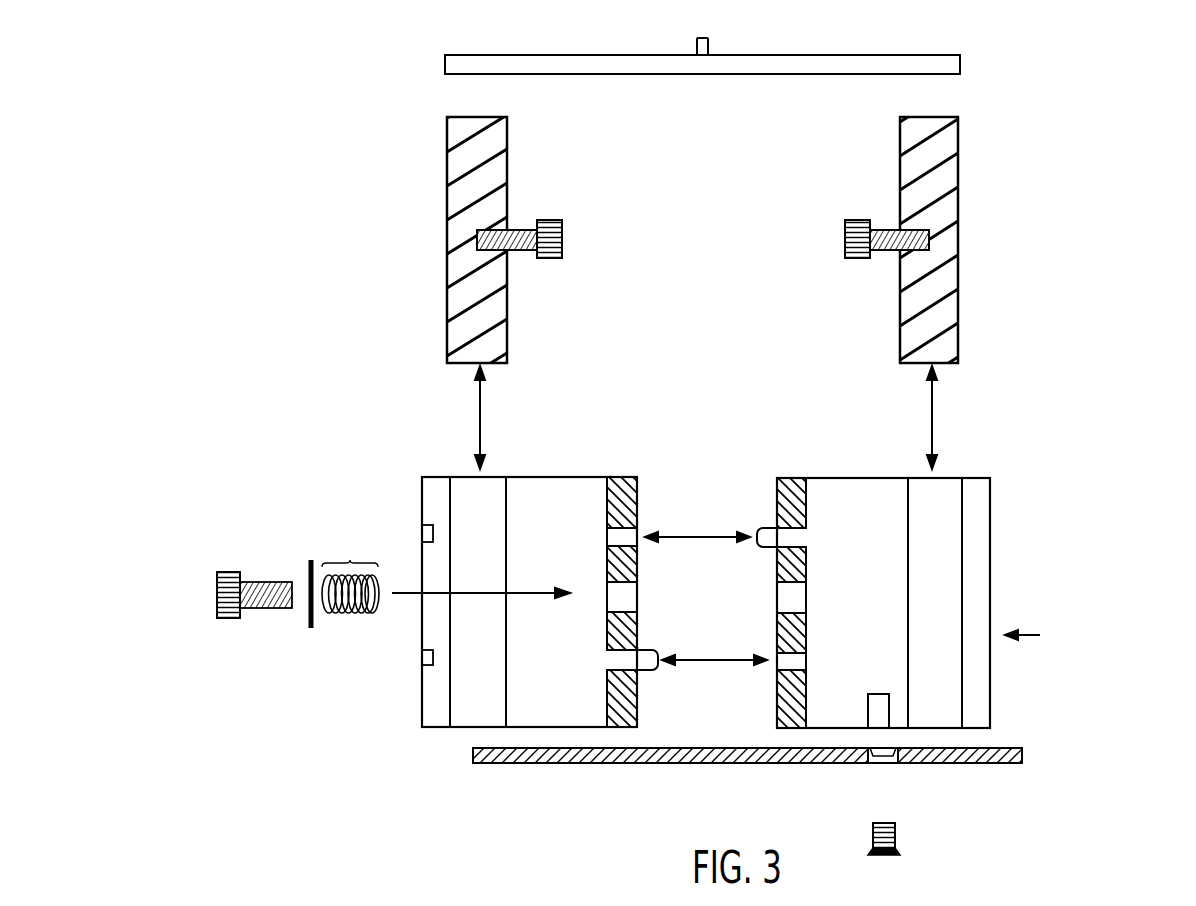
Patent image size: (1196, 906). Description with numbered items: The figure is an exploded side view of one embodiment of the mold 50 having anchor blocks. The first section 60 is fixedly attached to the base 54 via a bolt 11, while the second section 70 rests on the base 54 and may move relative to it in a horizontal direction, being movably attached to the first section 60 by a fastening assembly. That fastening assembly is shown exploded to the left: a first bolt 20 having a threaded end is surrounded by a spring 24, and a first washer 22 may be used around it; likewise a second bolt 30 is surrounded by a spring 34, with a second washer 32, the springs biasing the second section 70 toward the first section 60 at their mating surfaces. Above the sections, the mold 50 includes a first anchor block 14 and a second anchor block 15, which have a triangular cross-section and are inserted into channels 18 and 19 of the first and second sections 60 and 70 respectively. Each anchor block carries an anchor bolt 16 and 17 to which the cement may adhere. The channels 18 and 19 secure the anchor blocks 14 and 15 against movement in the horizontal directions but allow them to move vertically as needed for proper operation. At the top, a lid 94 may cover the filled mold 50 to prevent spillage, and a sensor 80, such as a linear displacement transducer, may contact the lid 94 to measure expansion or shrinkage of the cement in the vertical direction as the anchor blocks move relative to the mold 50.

The bolt 11 is at (915, 820).
The first anchor block 14 is at (909, 239).
The second anchor block 15 is at (496, 235).
The anchor bolt 16 is at (870, 219).
The anchor bolt 17 is at (536, 219).
The channel 18 is at (977, 584).
The channel 19 is at (492, 581).
The first bolt 20 is at (220, 576).
The first washer 22 is at (269, 564).
The spring 24 is at (353, 571).
The second bolt 30 is at (220, 576).
The second washer 32 is at (269, 564).
The spring 34 is at (353, 571).
The mold 50 is at (1124, 232).
The base 54 is at (768, 774).
The first section 60 is at (906, 584).
The second section 70 is at (525, 606).
The sensor 80 is at (722, 27).
The lid 94 is at (732, 44).